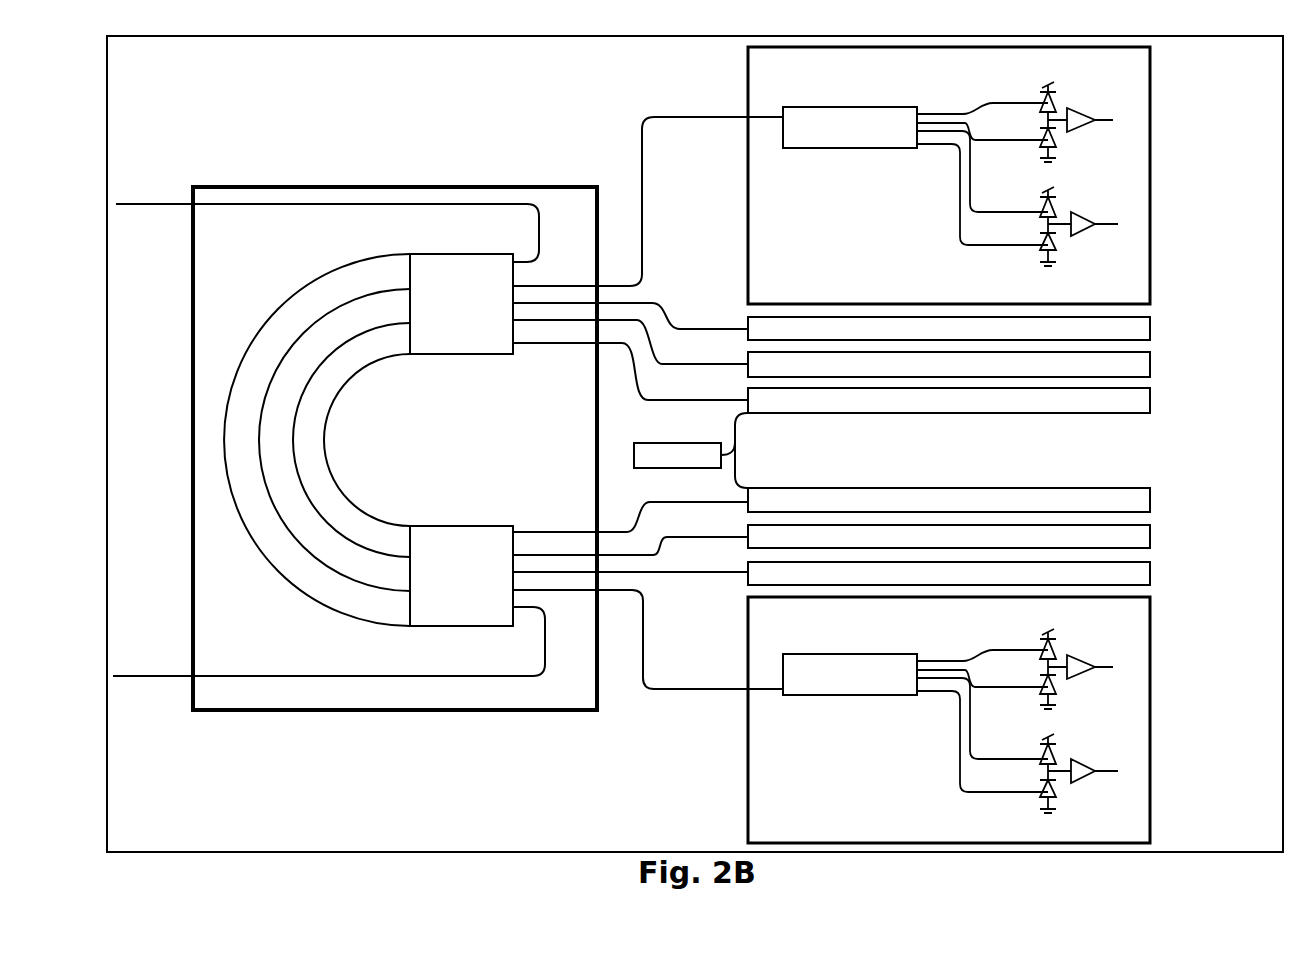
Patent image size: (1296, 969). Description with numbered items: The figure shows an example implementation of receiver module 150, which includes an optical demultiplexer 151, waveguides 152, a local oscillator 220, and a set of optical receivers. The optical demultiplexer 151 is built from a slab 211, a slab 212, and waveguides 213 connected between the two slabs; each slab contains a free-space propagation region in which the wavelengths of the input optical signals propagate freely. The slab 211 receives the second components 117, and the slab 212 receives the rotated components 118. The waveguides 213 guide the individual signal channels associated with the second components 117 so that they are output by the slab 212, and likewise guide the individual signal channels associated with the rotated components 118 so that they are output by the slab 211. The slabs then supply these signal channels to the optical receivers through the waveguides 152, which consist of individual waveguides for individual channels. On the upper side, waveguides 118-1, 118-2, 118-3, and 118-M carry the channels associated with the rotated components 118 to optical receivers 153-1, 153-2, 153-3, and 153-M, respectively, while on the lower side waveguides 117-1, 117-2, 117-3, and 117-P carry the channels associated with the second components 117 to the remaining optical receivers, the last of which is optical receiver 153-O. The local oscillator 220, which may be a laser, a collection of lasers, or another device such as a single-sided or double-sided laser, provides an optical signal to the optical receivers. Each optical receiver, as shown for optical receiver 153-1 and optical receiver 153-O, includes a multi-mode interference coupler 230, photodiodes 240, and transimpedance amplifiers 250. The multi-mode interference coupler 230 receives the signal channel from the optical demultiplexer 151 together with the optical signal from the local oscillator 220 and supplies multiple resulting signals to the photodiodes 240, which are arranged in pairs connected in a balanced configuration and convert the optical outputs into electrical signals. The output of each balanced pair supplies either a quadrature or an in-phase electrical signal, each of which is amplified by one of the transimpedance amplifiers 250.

The receiver module 150 is at (160, 67).
The optical demultiplexer 151 is at (396, 180).
The waveguides 152 is at (605, 760).
The second components 117 is at (143, 203).
The rotated components 118 is at (170, 677).
The slab 211 is at (461, 304).
The slab 212 is at (461, 576).
The waveguides 213 is at (355, 451).
The waveguide 118-1 is at (640, 143).
The waveguide 118-2 is at (654, 302).
The waveguide 118-3 is at (712, 366).
The waveguide 118-M is at (570, 346).
The waveguide 117-1 is at (607, 530).
The waveguide 117-2 is at (682, 537).
The waveguide 117-3 is at (706, 575).
The waveguide 117-P is at (685, 691).
The optical receiver 153-1 is at (1150, 153).
The optical receiver 153-2 is at (1150, 330).
The optical receiver 153-3 is at (1150, 367).
The optical receiver 153-M is at (1150, 403).
The optical receiver 153-O is at (1150, 717).
The local oscillator 220 is at (690, 450).
The multi-mode interference (MMI) coupler 230 is at (866, 143).
The photodiodes 240 is at (1040, 251).
The transimpedance amplifiers (TIAs) 250 is at (1090, 114).